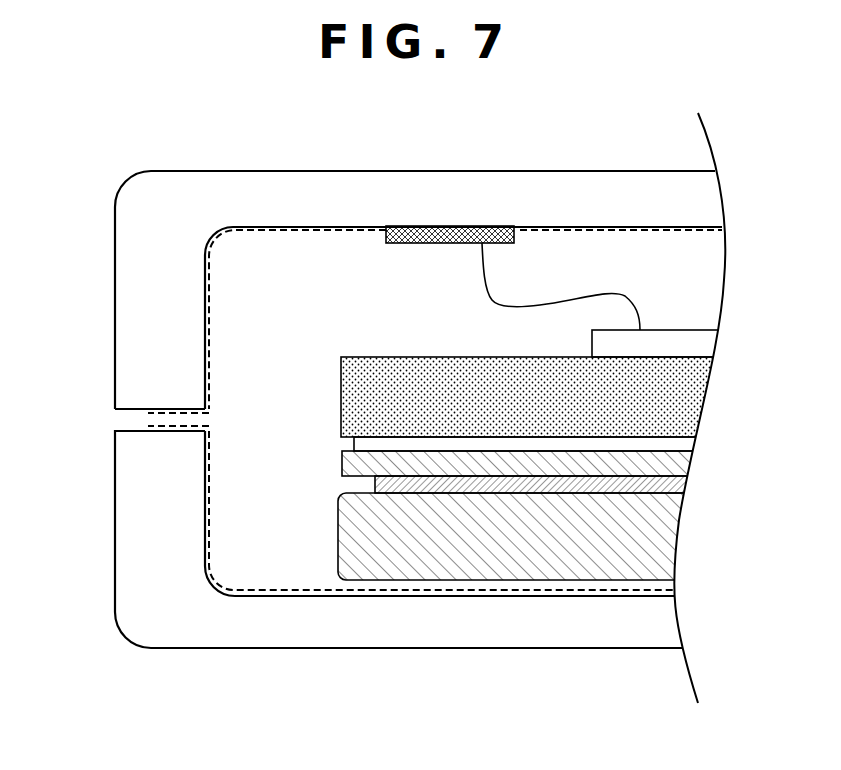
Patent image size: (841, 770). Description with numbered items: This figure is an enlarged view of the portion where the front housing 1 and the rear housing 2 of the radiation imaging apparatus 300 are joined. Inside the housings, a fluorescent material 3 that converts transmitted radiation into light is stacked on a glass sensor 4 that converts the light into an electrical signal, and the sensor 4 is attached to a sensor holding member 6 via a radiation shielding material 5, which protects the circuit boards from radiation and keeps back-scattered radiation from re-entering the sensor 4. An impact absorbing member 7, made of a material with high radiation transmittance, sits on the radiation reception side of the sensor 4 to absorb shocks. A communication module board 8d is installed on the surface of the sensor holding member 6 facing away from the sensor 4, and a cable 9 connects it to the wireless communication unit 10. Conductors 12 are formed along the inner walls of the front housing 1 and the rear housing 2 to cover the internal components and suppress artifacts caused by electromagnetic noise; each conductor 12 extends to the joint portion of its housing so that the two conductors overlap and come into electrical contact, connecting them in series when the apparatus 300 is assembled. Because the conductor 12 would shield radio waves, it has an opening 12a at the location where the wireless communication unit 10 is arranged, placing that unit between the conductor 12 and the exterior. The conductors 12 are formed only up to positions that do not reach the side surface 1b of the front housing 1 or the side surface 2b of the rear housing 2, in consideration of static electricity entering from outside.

The imaging apparatus 300 is at (55, 80).
The front housing 1 is at (540, 650).
The side surface of the front housing 1b is at (114, 537).
The rear housing 2 is at (230, 170).
The side surface of the rear housing 2b is at (114, 334).
The conductor 12 is at (210, 305).
The opening 12a is at (520, 230).
The wireless communication unit 10 is at (418, 226).
The cable 9 is at (616, 295).
The communication module board 8d is at (705, 346).
The sensor holding member 6 is at (688, 398).
The radiation shielding material 5 is at (684, 442).
The sensor 4 is at (682, 468).
The fluorescent material 3 is at (678, 498).
The impact absorbing member 7 is at (665, 543).